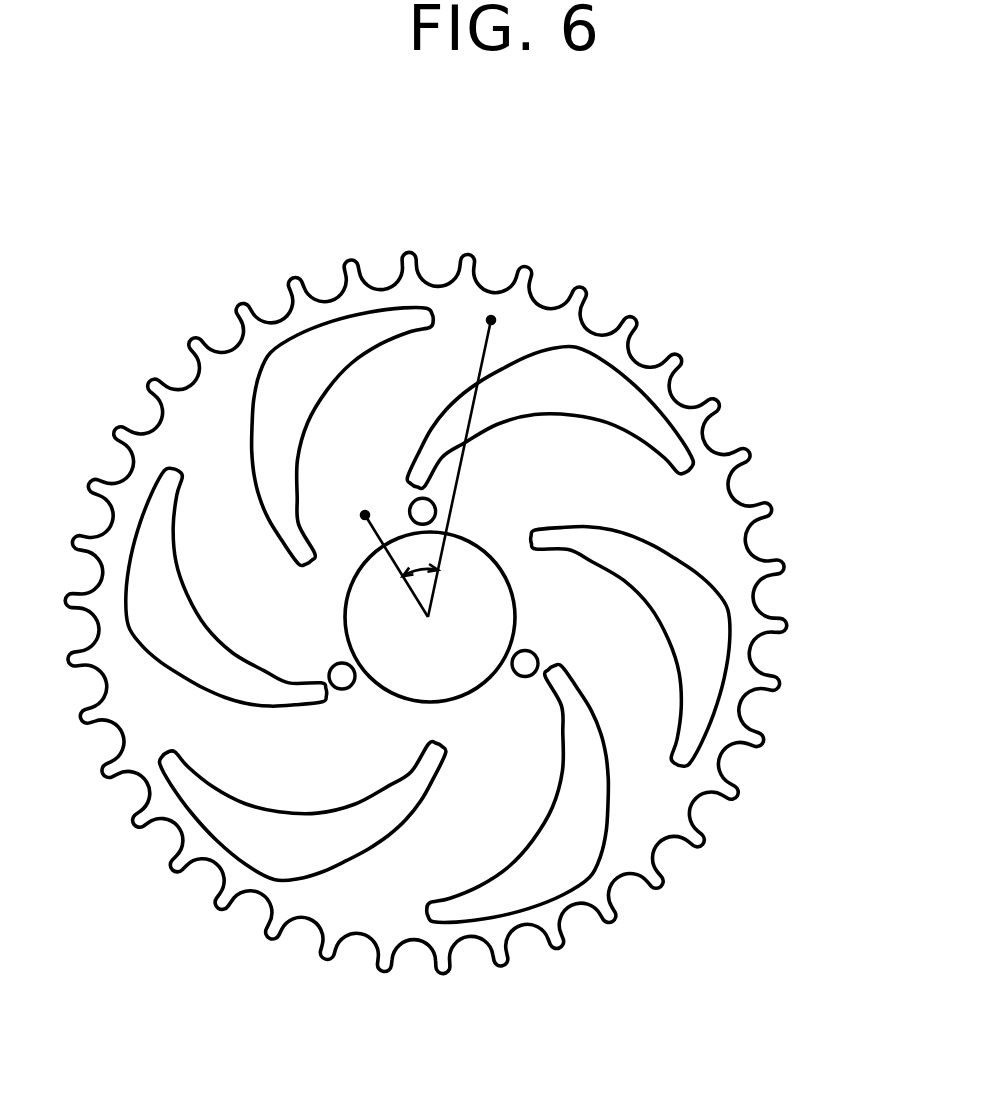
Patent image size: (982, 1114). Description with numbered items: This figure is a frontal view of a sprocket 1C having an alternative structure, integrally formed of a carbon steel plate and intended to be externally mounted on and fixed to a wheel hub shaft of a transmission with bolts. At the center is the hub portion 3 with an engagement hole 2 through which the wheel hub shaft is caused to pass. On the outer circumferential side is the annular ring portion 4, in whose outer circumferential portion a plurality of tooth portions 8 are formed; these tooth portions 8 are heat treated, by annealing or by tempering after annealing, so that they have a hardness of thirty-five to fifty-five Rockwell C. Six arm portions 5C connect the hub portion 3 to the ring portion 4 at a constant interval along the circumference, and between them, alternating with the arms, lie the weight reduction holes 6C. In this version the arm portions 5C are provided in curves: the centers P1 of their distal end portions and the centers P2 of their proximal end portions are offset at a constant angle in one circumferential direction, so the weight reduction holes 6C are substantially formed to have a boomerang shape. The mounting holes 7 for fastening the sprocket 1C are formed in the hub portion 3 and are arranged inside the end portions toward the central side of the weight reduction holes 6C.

The sprocket 1C is at (740, 312).
The engagement hole 2 is at (493, 626).
The hub portion 3 is at (428, 727).
The annular ring portion 4 is at (695, 430).
The arm portions 5C is at (378, 410).
The weight reduction holes 6C is at (303, 397).
The mounting holes 7 is at (350, 652).
The tooth portions 8 is at (792, 623).
The centers of the distal end portions P1 is at (491, 320).
The centers of the proximal end portions P2 is at (365, 515).